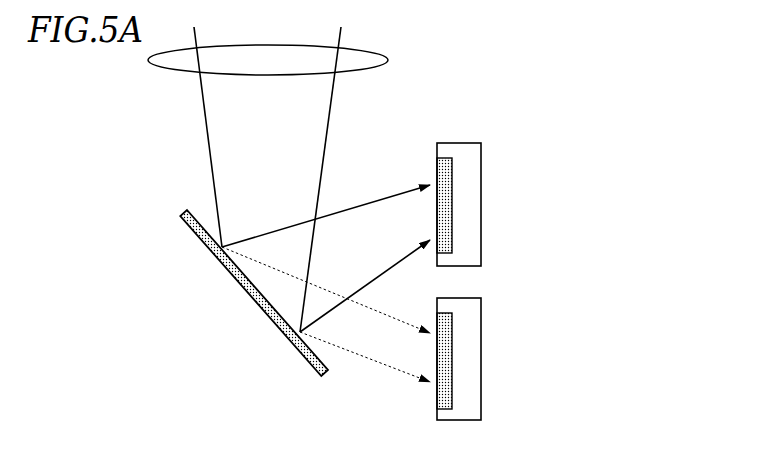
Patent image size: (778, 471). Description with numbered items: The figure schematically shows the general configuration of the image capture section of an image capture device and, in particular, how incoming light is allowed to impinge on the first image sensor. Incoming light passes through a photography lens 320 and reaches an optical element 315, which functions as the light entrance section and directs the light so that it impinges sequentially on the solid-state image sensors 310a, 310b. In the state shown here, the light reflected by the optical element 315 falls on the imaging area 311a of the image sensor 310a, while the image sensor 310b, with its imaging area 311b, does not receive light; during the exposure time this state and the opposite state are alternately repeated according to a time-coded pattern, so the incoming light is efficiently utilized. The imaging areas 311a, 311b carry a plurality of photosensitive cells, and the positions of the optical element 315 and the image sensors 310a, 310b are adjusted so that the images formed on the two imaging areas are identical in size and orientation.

The photography lens 320 is at (327, 52).
The optical element 315 is at (234, 293).
The first image sensor 310a is at (508, 181).
The imaging area of the first image sensor 311a is at (412, 188).
The second image sensor 310b is at (505, 352).
The imaging area of the second image sensor 311b is at (411, 386).